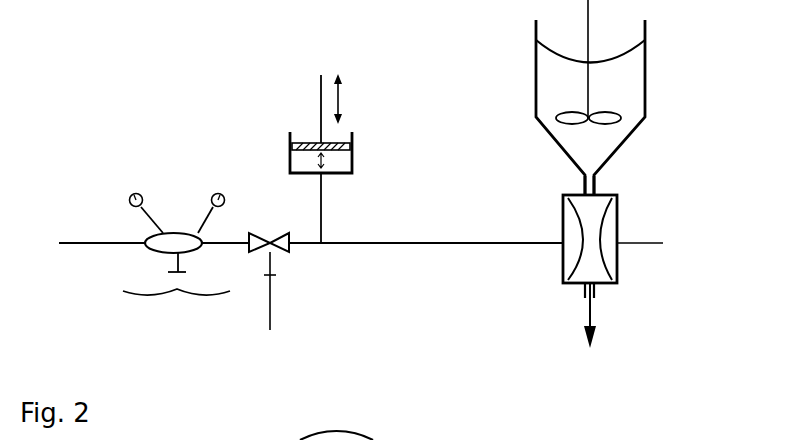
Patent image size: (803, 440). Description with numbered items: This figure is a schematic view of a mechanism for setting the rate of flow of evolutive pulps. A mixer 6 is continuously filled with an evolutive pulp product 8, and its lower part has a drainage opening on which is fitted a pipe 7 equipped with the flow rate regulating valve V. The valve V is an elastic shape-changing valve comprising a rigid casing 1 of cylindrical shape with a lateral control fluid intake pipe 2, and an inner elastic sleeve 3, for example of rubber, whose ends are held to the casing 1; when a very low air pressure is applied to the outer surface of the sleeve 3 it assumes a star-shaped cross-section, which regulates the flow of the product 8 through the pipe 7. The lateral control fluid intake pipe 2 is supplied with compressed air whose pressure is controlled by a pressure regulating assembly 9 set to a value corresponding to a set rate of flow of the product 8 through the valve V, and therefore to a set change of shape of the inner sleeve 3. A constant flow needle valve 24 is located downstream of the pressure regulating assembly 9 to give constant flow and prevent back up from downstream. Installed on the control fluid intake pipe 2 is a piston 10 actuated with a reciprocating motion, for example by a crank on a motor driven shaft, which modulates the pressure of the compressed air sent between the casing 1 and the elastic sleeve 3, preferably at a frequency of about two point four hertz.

The rigid casing 1 is at (608, 222).
The lateral control fluid intake pipe 2 is at (488, 243).
The inner elastic sleeve 3 is at (608, 270).
The mixer 6 is at (536, 57).
The pipe 7 is at (585, 186).
The evolutive pulp product 8 is at (565, 102).
The pressure regulating assembly 9 is at (178, 300).
The piston 10 is at (352, 155).
The constant flow needle valve 24 is at (270, 298).
The elastic shape-changing valve V is at (650, 244).